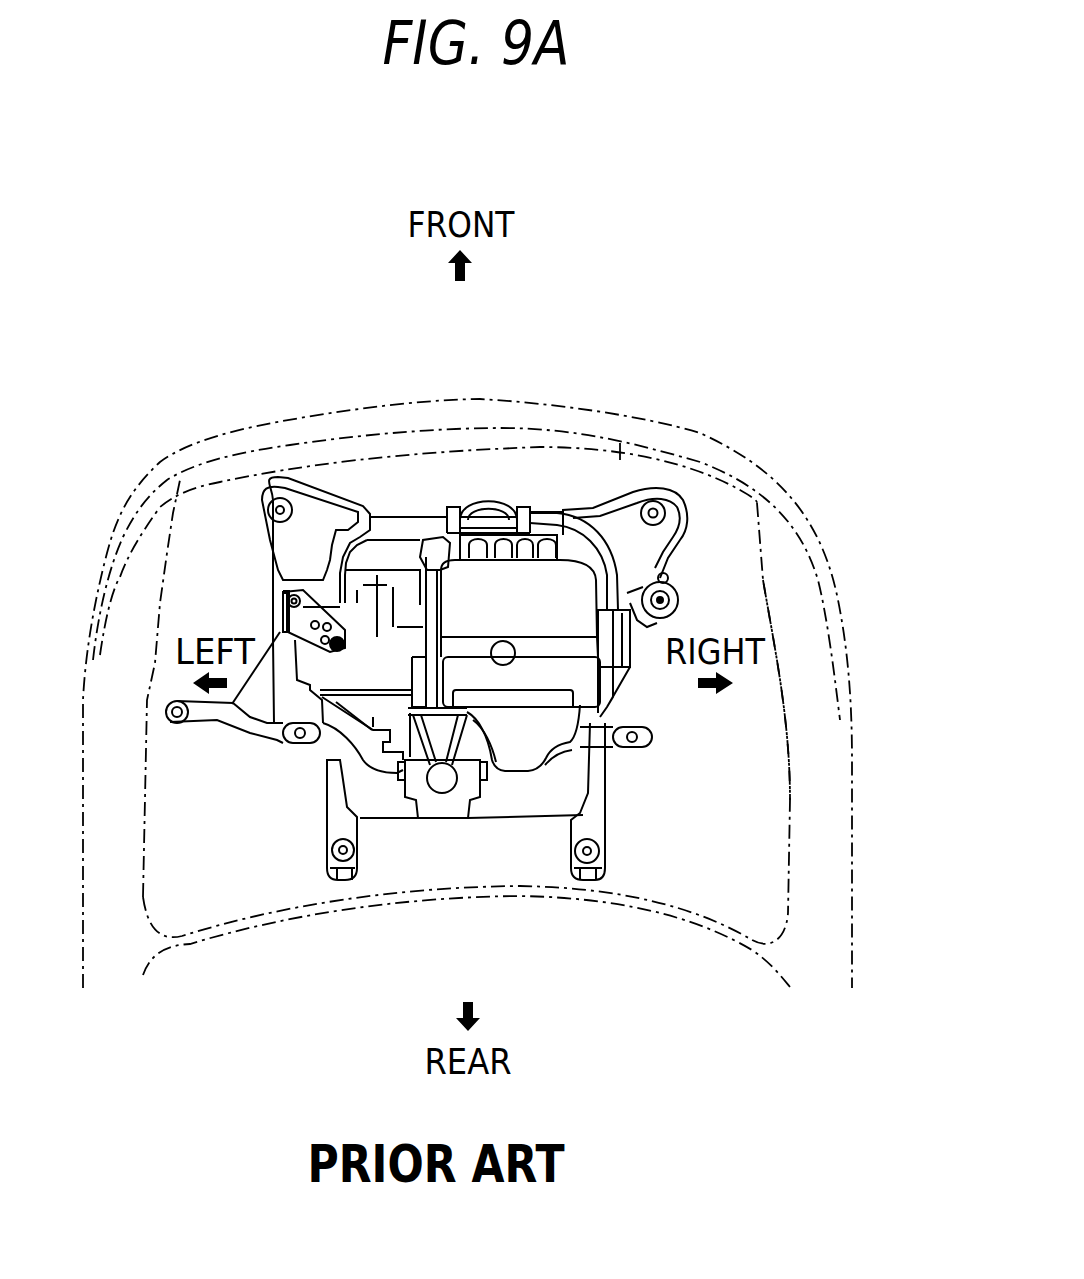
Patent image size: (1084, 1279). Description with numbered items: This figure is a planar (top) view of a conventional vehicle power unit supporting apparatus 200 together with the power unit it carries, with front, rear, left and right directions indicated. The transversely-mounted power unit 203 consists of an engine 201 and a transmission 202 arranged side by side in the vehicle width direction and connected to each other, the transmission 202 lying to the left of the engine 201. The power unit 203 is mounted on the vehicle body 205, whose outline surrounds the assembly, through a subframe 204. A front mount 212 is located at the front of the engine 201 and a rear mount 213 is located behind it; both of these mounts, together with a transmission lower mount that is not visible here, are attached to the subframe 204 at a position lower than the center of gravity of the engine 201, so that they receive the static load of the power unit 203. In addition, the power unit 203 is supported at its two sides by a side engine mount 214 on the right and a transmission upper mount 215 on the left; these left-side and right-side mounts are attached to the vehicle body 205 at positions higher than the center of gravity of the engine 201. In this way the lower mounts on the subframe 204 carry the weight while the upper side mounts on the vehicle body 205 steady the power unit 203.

The vehicle power unit supporting apparatus 200 is at (776, 328).
The engine 201 is at (522, 592).
The transmission 202 is at (375, 583).
The power unit 203 is at (334, 556).
The subframe 204 is at (570, 787).
The vehicle body 205 is at (817, 760).
The front mount 212 is at (487, 503).
The rear mount 213 is at (440, 803).
The side engine mount 214 is at (666, 574).
The transmission upper mount 215 is at (273, 613).